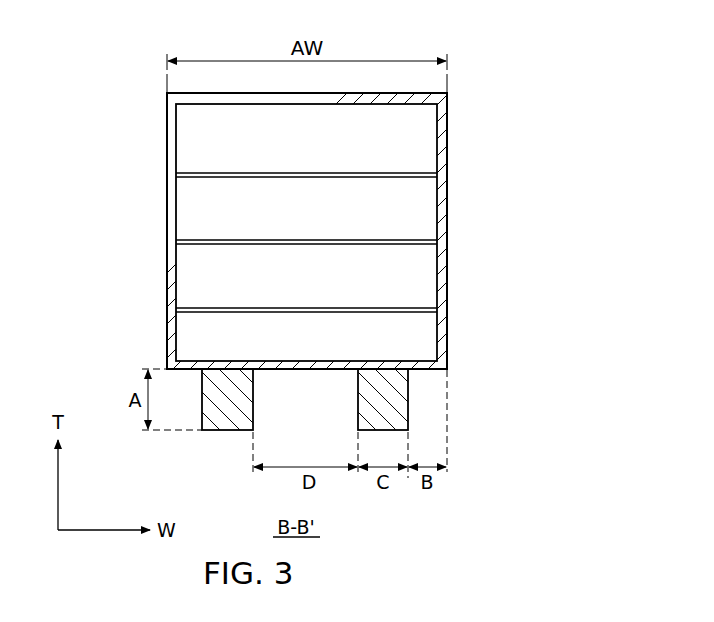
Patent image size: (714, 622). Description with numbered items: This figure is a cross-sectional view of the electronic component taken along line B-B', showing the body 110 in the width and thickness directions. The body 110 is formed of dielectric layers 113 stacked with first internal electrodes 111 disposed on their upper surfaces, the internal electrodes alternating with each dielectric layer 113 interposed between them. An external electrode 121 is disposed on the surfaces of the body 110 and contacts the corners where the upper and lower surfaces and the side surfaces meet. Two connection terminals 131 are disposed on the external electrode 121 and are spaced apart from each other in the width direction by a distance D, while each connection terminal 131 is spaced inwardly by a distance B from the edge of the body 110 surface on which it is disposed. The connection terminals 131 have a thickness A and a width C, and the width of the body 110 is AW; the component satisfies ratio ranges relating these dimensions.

The body 110 is at (447, 141).
The external electrode 121 is at (445, 120).
The dielectric layer 113 is at (420, 211).
The first internal electrode 111 is at (397, 309).
The connection terminal 131 is at (223, 430).